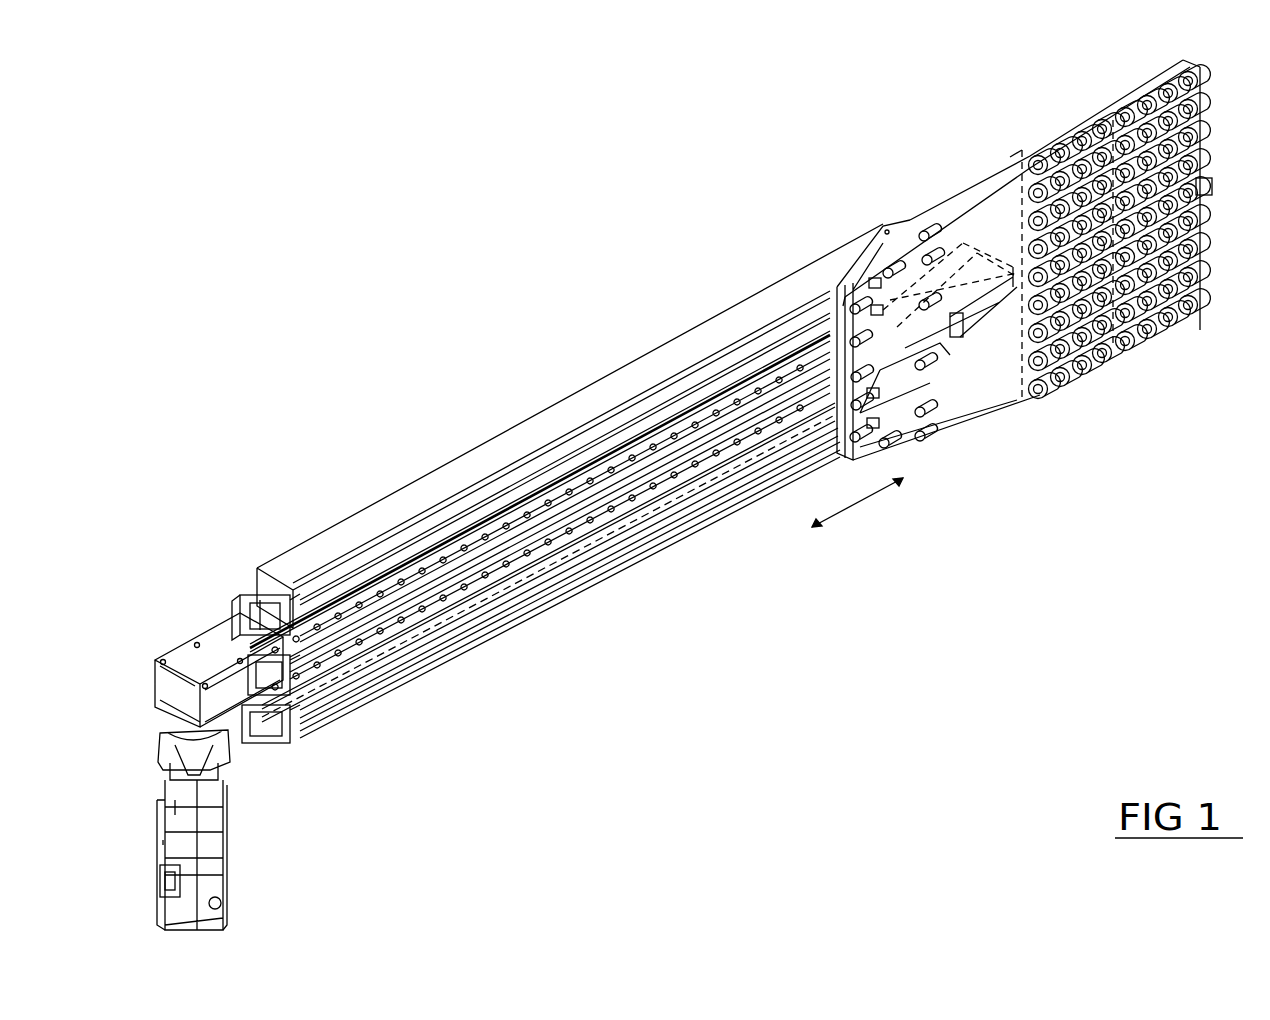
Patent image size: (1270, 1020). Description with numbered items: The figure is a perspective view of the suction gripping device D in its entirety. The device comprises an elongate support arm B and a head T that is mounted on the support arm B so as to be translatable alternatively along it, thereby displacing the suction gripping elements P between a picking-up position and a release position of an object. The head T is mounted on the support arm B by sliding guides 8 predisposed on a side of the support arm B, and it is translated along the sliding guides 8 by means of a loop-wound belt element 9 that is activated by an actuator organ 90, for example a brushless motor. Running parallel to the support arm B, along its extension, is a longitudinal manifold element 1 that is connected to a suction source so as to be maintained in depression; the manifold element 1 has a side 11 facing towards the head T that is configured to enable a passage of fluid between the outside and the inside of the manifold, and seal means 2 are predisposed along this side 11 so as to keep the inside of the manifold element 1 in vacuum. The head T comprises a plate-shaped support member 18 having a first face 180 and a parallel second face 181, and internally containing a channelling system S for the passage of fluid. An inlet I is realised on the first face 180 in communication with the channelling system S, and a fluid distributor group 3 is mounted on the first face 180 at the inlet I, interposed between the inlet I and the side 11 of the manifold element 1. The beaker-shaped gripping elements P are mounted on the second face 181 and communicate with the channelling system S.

The manifold element 1 is at (722, 320).
The seal means 2 is at (660, 397).
The fluid distributor group 3 is at (828, 300).
The sliding guides 8 is at (363, 643).
The belt element 9 is at (228, 713).
The side 11 is at (705, 360).
The plate-shaped support member 18 is at (1008, 155).
The actuator organ 90 is at (217, 820).
The first face 180 is at (940, 200).
The second face 181 is at (993, 392).
The support arm B is at (222, 633).
The suction gripping device D is at (380, 338).
The inlet I is at (873, 307).
The suction gripping element P is at (1062, 150).
The channelling system S is at (1040, 395).
The head T is at (999, 190).